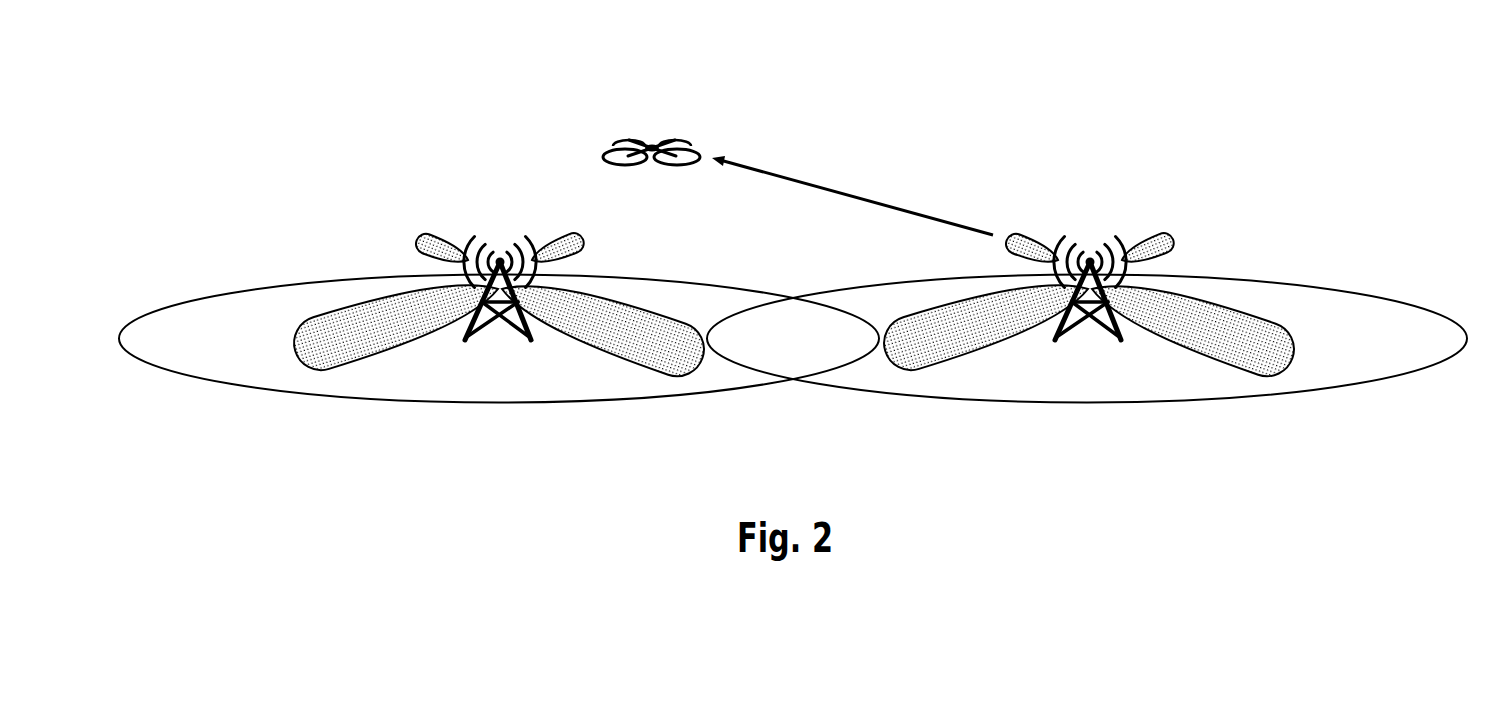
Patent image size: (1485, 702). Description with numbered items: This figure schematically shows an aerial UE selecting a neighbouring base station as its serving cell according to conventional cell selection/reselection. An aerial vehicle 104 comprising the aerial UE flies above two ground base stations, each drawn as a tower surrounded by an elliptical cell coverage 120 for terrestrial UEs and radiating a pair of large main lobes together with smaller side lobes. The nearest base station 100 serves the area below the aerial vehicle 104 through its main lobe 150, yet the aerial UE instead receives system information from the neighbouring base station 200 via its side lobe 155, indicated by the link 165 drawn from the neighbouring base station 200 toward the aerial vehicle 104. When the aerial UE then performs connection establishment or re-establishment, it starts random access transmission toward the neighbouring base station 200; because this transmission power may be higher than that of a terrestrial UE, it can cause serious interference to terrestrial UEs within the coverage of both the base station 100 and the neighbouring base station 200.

The base station 100 is at (517, 328).
The neighbouring base station 200 is at (1107, 328).
The aerial vehicle 104 is at (643, 132).
The cell coverage 120 is at (158, 311).
The main lobe 150 is at (594, 350).
The side lobe 155 is at (1031, 240).
The communication link / signal 165 is at (851, 194).